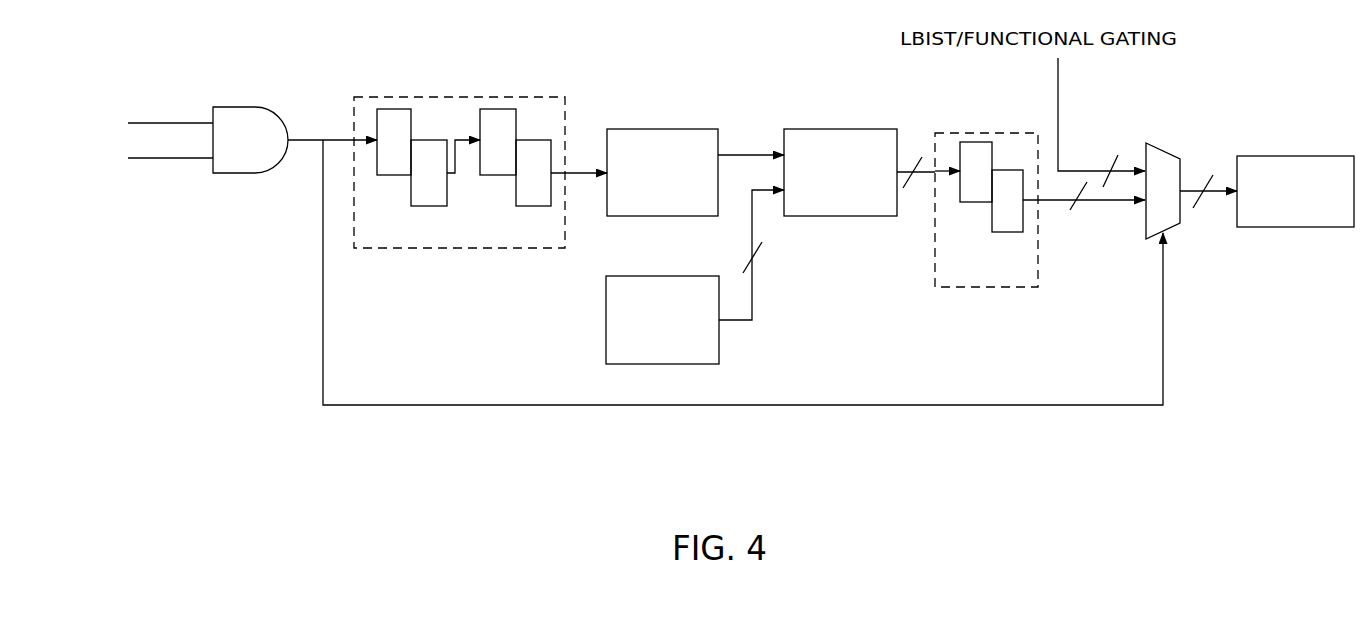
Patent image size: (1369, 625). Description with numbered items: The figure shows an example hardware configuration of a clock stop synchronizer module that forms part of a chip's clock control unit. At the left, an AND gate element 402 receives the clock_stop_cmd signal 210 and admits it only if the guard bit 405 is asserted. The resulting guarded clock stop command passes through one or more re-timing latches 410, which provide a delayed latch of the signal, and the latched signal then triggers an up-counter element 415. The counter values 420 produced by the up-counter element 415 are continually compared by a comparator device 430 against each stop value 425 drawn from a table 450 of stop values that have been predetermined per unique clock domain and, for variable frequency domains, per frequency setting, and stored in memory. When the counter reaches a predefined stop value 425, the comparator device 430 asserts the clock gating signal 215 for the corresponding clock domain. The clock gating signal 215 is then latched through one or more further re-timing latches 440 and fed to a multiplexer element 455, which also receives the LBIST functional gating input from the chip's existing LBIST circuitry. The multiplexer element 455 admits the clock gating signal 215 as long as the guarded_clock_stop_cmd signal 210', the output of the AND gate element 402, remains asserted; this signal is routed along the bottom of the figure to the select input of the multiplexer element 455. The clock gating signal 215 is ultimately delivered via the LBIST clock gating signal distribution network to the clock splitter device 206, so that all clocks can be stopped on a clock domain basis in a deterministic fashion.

The clock_stop_cmd signal 210 is at (132, 89).
The guard bit 405 is at (188, 160).
The AND gate element 402 is at (258, 108).
The re-timing latches 410 is at (548, 118).
The up-counter element 415 is at (666, 139).
The counter values 420 is at (748, 151).
The comparator device 430 is at (836, 129).
The clock gating signal 215 is at (909, 154).
The re-timing latches 440 is at (985, 288).
The multiplexer element 455 is at (1167, 160).
The clock splitter device 206 is at (1295, 191).
The table of stop values 450 is at (606, 322).
The stop value 425 is at (752, 298).
The guarded_clock_stop_cmd signal 210' is at (743, 307).